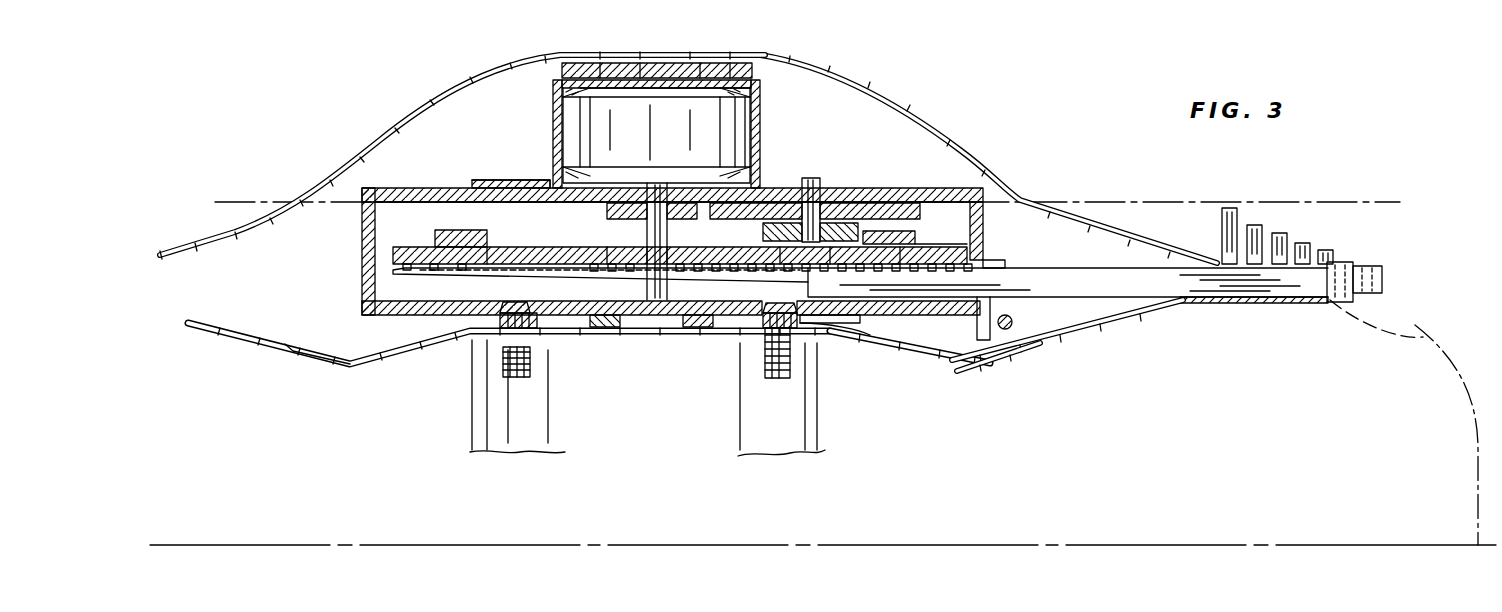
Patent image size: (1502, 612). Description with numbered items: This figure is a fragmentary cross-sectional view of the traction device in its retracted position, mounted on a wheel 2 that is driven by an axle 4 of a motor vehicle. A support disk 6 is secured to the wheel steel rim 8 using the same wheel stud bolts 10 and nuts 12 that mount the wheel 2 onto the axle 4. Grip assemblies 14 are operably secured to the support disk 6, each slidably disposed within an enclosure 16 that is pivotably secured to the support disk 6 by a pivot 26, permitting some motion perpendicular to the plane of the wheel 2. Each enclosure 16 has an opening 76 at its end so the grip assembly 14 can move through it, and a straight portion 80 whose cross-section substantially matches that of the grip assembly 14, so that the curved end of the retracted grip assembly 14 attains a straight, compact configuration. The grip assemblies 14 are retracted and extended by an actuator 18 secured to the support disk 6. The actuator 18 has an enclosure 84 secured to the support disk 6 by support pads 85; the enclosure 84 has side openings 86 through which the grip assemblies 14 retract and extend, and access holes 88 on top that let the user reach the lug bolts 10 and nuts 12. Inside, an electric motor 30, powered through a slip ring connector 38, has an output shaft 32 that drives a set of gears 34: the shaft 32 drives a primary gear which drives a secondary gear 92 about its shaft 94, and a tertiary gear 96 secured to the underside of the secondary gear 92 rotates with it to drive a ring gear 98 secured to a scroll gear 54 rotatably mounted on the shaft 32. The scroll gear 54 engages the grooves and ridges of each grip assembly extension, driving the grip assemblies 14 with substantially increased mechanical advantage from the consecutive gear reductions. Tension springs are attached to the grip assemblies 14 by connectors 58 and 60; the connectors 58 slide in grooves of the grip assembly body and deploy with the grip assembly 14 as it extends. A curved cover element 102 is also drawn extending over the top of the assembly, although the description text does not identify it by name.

The wheel 2 is at (1462, 398).
The axle 4 is at (470, 412).
The support disk 6 is at (1070, 342).
The wheel steel rim 8 is at (1015, 352).
The wheel stud bolts 10 is at (535, 375).
The nuts 12 is at (560, 350).
The grip assemblies 14 is at (1382, 280).
The enclosure 16 is at (1182, 306).
The actuator 18 is at (775, 85).
The pivot 26 is at (1002, 330).
The electric motor 30 is at (700, 105).
The output shaft 32 is at (648, 182).
The set of gears 34 is at (424, 240).
The slip ring connector 38 is at (668, 62).
The scroll gear 54 is at (922, 272).
The connectors 58 is at (1332, 302).
The connectors 60 is at (1398, 318).
The opening 76 is at (962, 330).
The straight portion 80 is at (1220, 305).
The enclosure 84 is at (372, 335).
The support pads 85 is at (690, 340).
The side openings 86 is at (985, 262).
The access holes 88 is at (497, 188).
The secondary gear 92 is at (760, 205).
The shaft 94 is at (812, 178).
The tertiary gear 96 is at (840, 223).
The ring gear 98 is at (895, 238).
The forward fairing 102 is at (392, 137).